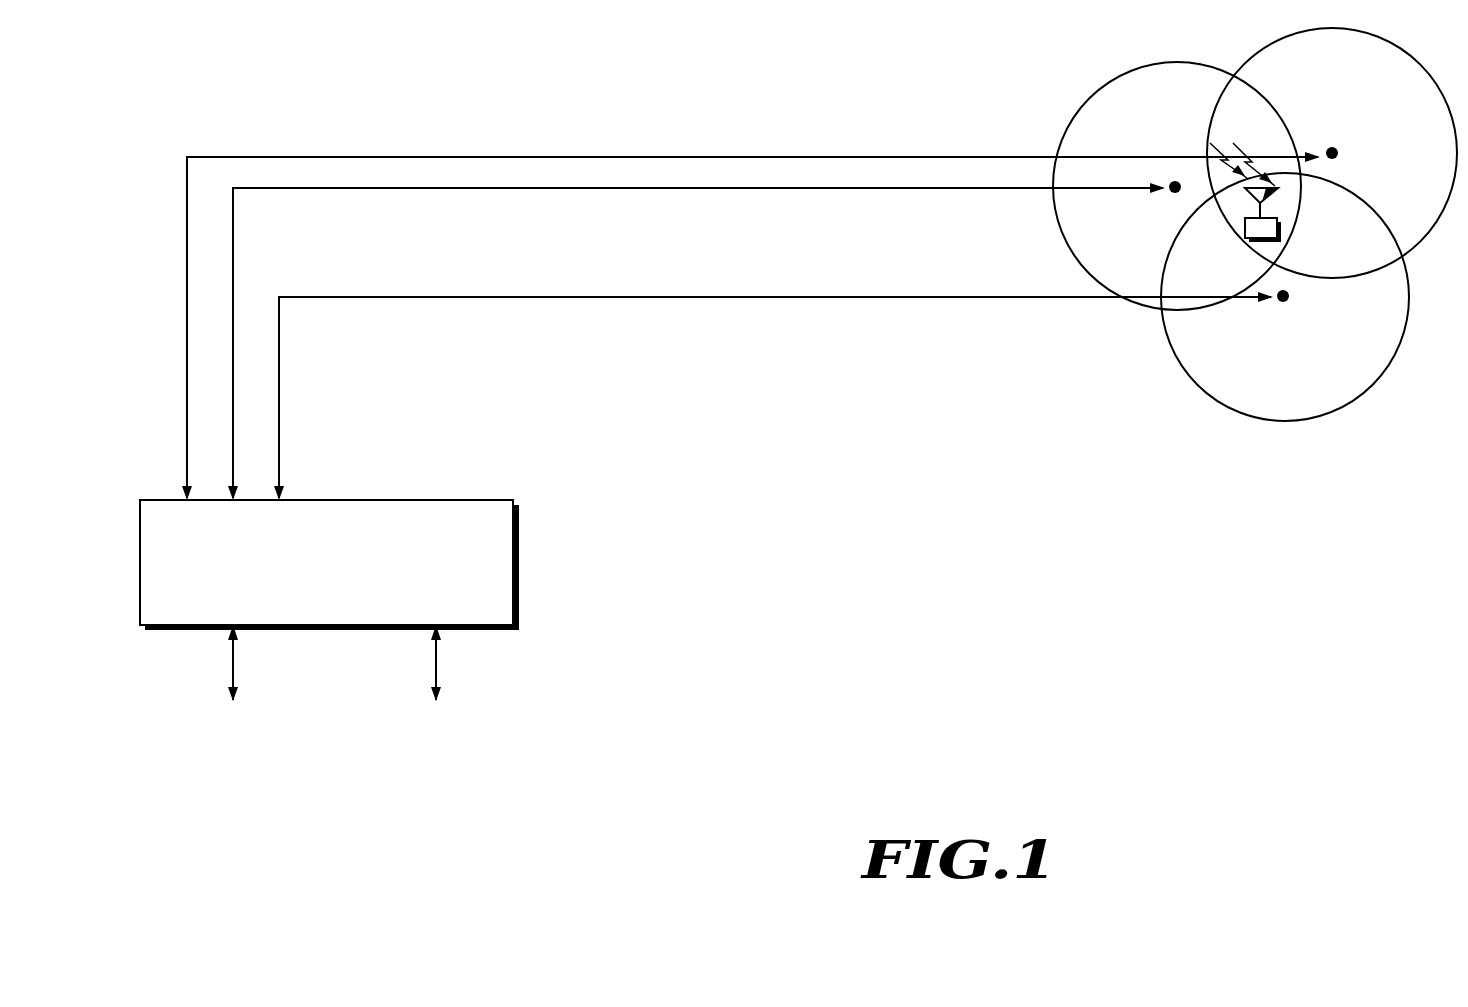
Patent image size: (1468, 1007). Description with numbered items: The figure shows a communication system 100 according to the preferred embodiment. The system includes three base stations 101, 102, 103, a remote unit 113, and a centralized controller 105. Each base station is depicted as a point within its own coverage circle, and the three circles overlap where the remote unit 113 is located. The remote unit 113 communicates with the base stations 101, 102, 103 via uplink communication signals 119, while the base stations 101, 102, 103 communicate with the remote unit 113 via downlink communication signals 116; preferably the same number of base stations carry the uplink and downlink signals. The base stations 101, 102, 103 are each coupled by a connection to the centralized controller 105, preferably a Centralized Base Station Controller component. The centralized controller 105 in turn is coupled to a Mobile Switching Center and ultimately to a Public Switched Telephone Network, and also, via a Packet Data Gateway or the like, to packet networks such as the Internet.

The communication system 100 is at (798, 397).
The base station 101 is at (1287, 303).
The base station 102 is at (1338, 150).
The base station 103 is at (1170, 196).
The centralized controller 105 is at (517, 535).
The remote unit 113 is at (1280, 230).
The downlink communication signals 116 is at (1216, 163).
The uplink communication signals 119 is at (1268, 167).